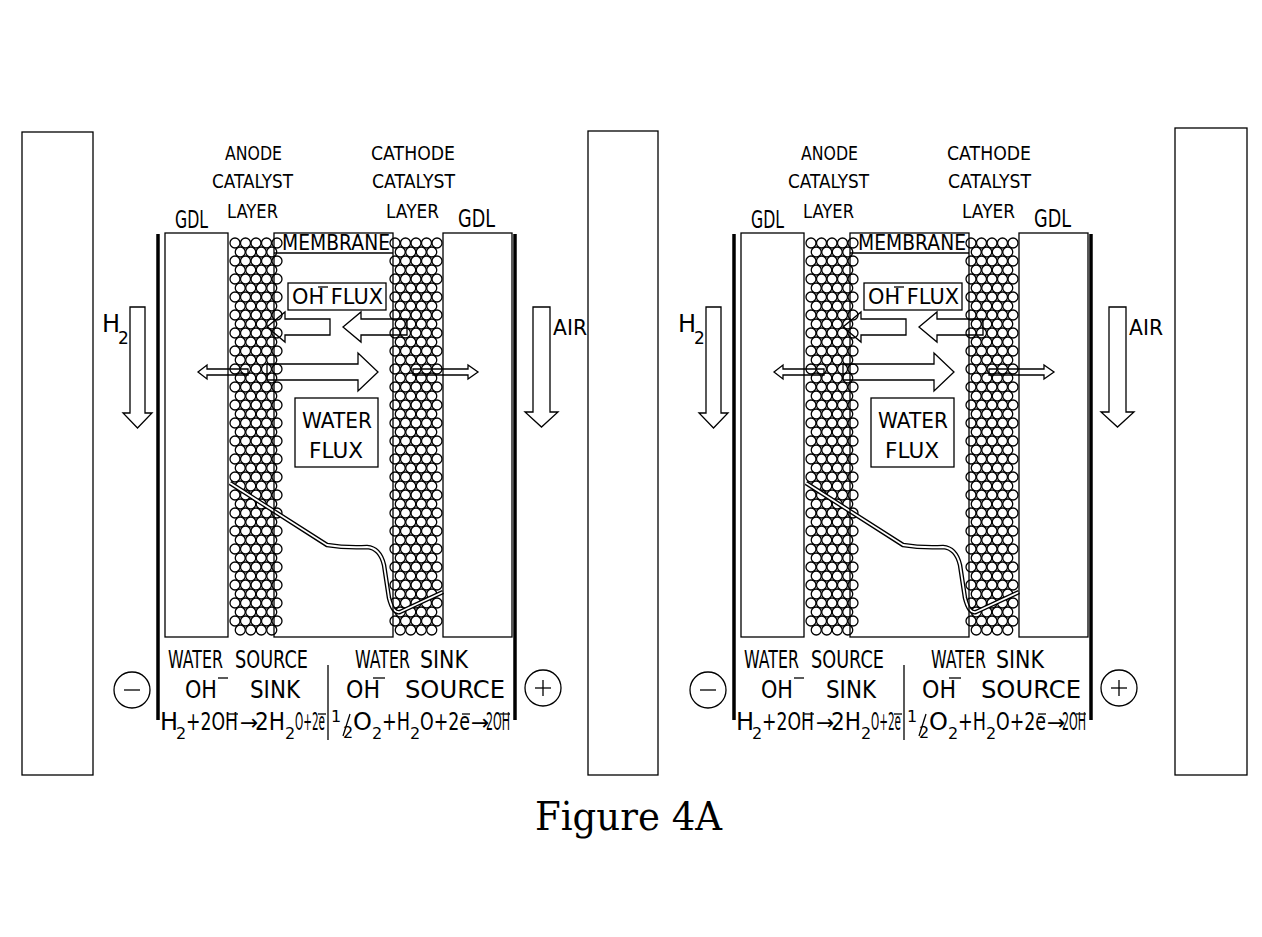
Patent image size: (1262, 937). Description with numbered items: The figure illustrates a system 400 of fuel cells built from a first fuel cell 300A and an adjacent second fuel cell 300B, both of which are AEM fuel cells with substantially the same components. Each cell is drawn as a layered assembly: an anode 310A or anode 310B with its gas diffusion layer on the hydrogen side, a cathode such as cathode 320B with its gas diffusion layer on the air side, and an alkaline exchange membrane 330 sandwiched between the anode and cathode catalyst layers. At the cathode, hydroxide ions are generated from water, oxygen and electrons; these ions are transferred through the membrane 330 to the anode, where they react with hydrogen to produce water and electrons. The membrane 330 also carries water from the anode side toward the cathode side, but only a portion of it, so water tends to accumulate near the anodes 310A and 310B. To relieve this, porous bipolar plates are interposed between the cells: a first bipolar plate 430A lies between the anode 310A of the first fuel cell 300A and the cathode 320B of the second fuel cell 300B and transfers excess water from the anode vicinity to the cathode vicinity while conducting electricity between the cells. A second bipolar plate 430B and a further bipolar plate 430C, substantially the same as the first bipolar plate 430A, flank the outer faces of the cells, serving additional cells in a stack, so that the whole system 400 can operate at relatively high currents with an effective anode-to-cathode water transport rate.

The system 400 is at (767, 57).
The first fuel cell 300A is at (1010, 90).
The second fuel cell 300B is at (400, 92).
The anode 310A is at (748, 233).
The anode 310B is at (172, 233).
The cathode 320B is at (502, 233).
The alkaline exchange membrane 330 is at (358, 283).
The first bipolar plate 430A is at (637, 131).
The second bipolar plate 430B is at (1225, 128).
The bipolar plate 430C is at (70, 132).